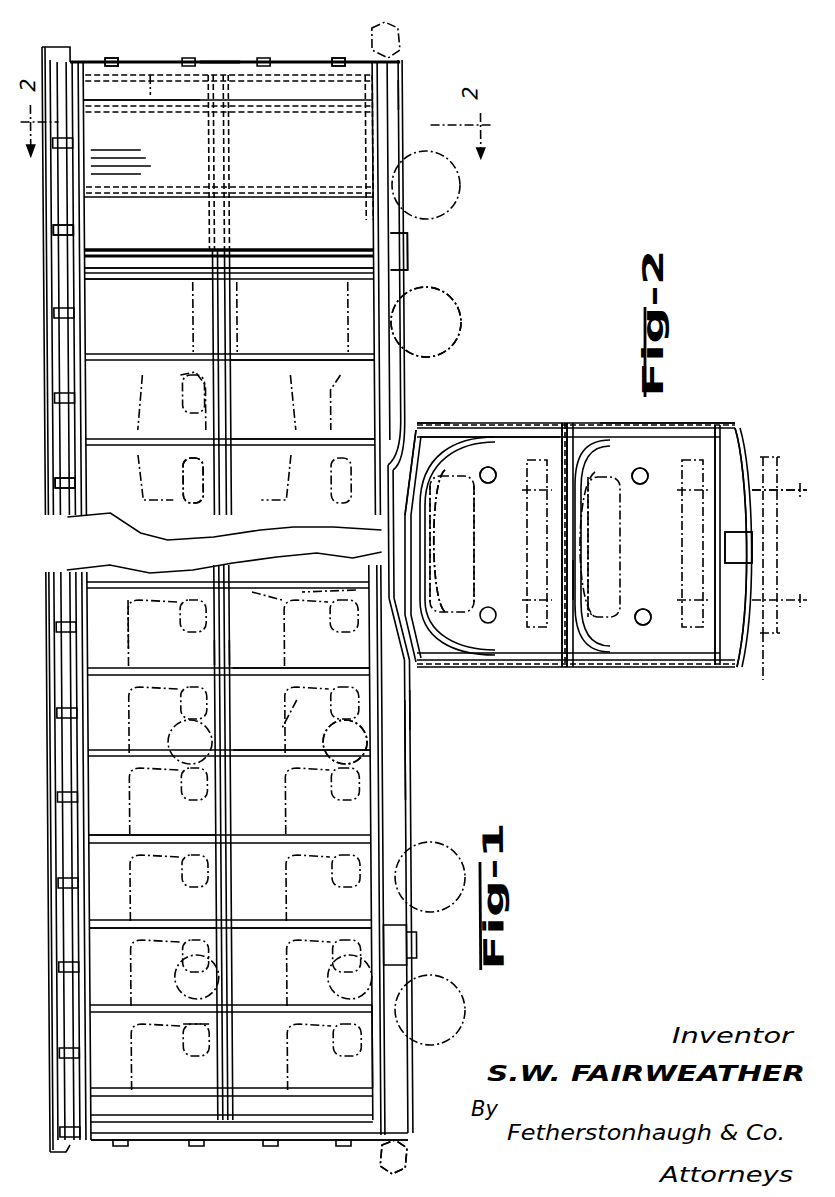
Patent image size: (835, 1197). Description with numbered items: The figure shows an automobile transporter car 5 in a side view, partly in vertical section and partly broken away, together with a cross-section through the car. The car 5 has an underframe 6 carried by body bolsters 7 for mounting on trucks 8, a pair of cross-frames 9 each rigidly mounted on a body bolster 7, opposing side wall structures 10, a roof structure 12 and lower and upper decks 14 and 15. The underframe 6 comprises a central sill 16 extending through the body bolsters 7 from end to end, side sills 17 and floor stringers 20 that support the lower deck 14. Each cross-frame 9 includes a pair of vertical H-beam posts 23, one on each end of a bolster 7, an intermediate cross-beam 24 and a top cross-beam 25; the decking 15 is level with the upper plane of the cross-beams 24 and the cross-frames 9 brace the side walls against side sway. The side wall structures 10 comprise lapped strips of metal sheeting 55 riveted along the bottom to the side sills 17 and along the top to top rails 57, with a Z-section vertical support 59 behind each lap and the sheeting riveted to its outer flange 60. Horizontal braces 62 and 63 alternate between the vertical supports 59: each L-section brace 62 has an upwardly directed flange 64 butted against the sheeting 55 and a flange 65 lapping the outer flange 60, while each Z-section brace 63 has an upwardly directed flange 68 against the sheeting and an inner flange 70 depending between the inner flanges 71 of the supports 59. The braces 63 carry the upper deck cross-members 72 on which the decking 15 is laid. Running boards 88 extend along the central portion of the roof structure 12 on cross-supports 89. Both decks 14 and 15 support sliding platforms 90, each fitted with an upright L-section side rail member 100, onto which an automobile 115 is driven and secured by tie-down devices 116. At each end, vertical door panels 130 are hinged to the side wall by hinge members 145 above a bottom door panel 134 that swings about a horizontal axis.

In FIG. 1, the automobile transporter car 5 is at (236, 60).
In FIG. 1, the underframe 6 is at (407, 775).
In FIG. 1, the body bolster 7 is at (408, 252).
In FIG. 2, the body bolster 7 is at (740, 445).
In FIG. 1, the truck 8 is at (449, 300).
In FIG. 2, the truck 8 is at (763, 670).
In FIG. 1, the cross-frame 9 is at (327, 268).
In FIG. 2, the cross-frame 9 is at (570, 420).
In FIG. 1, the side wall structure 10 is at (153, 70).
In FIG. 2, the side wall structure 10 is at (540, 420).
In FIG. 1, the roof structure 12 is at (398, 95).
In FIG. 2, the roof structure 12 is at (398, 472).
In FIG. 1, the lower deck 14 is at (364, 1020).
In FIG. 2, the lower deck 14 is at (712, 665).
In FIG. 1, the upper deck 15 is at (215, 1030).
In FIG. 2, the upper deck 15 is at (497, 476).
In FIG. 1, the central sill 16 is at (407, 700).
In FIG. 2, the central sill 16 is at (753, 547).
In FIG. 2, the side sill 17 is at (710, 420).
In FIG. 2, the floor stringer 20 is at (755, 488).
In FIG. 1, the vertical H-beam post 23 is at (157, 250).
In FIG. 2, the vertical H-beam post 23 is at (505, 650).
In FIG. 1, the intermediate cross-beam 24 is at (238, 940).
In FIG. 2, the intermediate cross-beam 24 is at (605, 640).
In FIG. 1, the top cross-beam 25 is at (106, 925).
In FIG. 2, the top cross-beam 25 is at (436, 590).
In FIG. 1, the metal sheeting 55 is at (185, 125).
In FIG. 2, the metal sheeting 55 is at (490, 420).
In FIG. 1, the top rail 57 is at (88, 300).
In FIG. 2, the top rail 57 is at (420, 420).
In FIG. 1, the Z-section vertical support 59 is at (155, 1000).
In FIG. 1, the outer flange 60 is at (315, 695).
In FIG. 1, the horizontal brace 62 is at (232, 475).
In FIG. 1, the horizontal brace 63 is at (232, 395).
In FIG. 1, the flange 64 is at (216, 870).
In FIG. 1, the flange 65 is at (233, 730).
In FIG. 1, the flange 68 is at (219, 395).
In FIG. 1, the inner flange 70 is at (241, 650).
In FIG. 1, the inner flange 71 is at (341, 592).
In FIG. 1, the upper deck cross-member 72 is at (234, 610).
In FIG. 1, the running board 88 is at (52, 480).
In FIG. 1, the cross-support 89 is at (52, 228).
In FIG. 1, the sliding platform 90 is at (205, 675).
In FIG. 2, the sliding platform 90 is at (560, 580).
In FIG. 2, the side rail member 100 is at (648, 478).
In FIG. 1, the automobile 115 is at (132, 465).
In FIG. 2, the automobile 115 is at (460, 470).
In FIG. 1, the tie-down device 116 is at (335, 735).
In FIG. 1, the door panel 130 is at (155, 1145).
In FIG. 1, the bottom door panel 134 is at (362, 1140).
In FIG. 1, the hinge member 145 is at (335, 57).